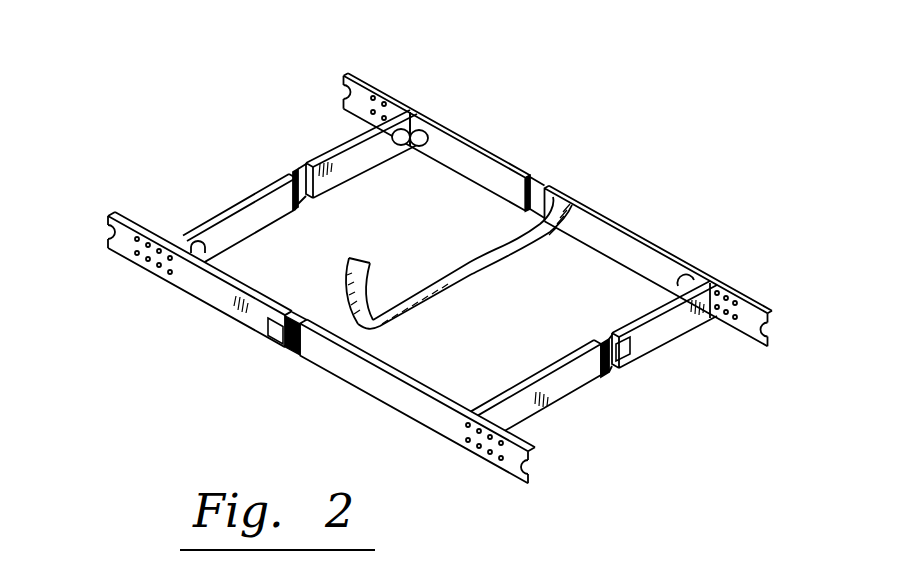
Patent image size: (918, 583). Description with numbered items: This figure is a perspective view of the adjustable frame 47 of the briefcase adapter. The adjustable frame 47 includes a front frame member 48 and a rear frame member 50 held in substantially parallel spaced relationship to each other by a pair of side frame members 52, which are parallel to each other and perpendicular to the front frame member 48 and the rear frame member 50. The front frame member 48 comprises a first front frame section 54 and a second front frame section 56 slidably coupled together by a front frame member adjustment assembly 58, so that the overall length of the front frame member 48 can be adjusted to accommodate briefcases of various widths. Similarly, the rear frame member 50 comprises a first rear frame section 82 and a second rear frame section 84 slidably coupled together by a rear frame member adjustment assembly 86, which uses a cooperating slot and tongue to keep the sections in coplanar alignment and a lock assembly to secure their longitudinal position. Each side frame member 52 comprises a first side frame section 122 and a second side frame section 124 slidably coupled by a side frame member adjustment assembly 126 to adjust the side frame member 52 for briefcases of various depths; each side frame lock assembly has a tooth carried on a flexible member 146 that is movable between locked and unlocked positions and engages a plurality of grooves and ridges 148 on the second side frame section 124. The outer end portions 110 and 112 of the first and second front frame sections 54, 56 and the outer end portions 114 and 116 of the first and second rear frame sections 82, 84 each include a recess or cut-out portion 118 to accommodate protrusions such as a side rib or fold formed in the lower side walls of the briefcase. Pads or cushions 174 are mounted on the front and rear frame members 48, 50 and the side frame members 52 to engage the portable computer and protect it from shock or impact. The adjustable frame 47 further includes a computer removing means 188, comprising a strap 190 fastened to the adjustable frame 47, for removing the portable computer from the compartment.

The adjustable frame 47 is at (700, 237).
The front frame member 48 is at (356, 411).
The rear frame member 50 is at (615, 202).
The side frame member 52 is at (250, 188).
The first front frame section 54 is at (202, 289).
The second front frame section 56 is at (388, 380).
The front frame member adjustment assembly 58 is at (307, 308).
The first rear frame section 82 is at (488, 162).
The second rear frame section 84 is at (620, 228).
The rear frame member adjustment assembly 86 is at (540, 176).
The outer end portion 110 is at (133, 258).
The outer end portion 112 is at (505, 467).
The outer end portion 114 is at (380, 85).
The outer end portion 116 is at (768, 305).
The recess or cut-out portion 118 is at (345, 92).
The first side frame section 122 is at (343, 137).
The second side frame section 124 is at (230, 207).
The side frame member adjustment assembly 126 is at (294, 166).
The flexible member 146 is at (268, 333).
The grooves and ridges 148 is at (292, 345).
The pads or cushions 174 is at (417, 134).
The computer removing means 188 is at (424, 278).
The strap 190 is at (513, 243).